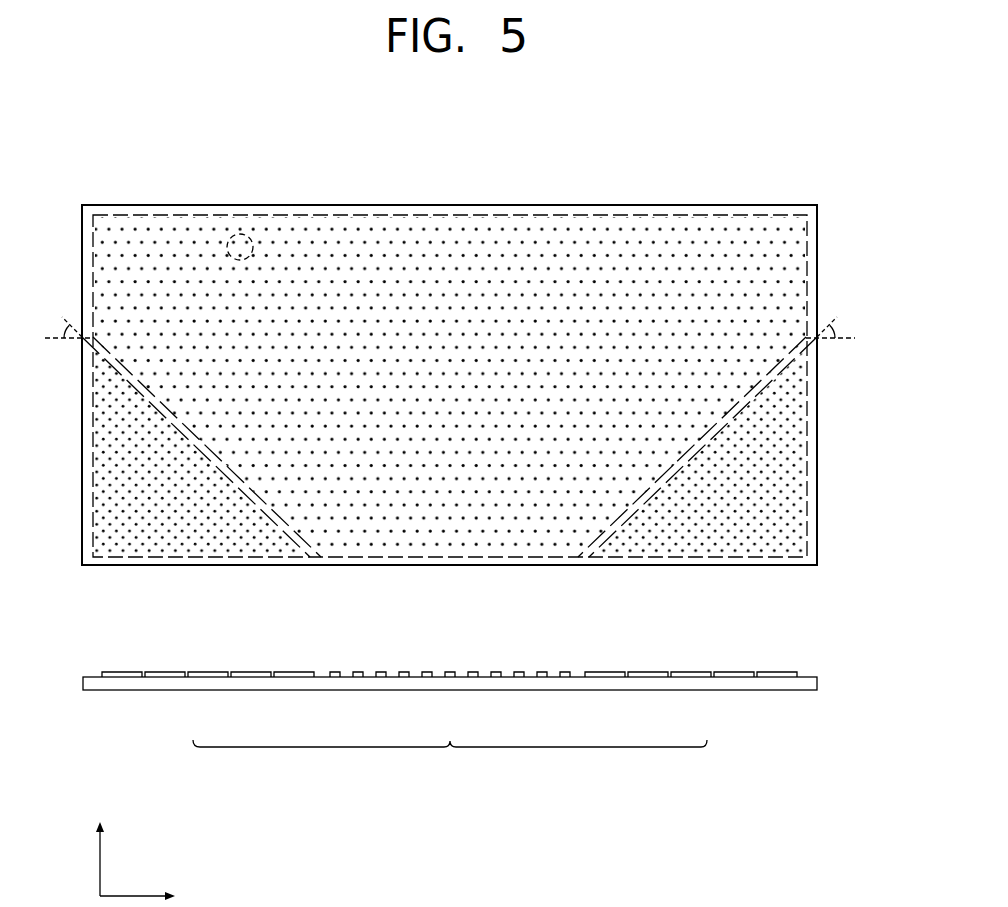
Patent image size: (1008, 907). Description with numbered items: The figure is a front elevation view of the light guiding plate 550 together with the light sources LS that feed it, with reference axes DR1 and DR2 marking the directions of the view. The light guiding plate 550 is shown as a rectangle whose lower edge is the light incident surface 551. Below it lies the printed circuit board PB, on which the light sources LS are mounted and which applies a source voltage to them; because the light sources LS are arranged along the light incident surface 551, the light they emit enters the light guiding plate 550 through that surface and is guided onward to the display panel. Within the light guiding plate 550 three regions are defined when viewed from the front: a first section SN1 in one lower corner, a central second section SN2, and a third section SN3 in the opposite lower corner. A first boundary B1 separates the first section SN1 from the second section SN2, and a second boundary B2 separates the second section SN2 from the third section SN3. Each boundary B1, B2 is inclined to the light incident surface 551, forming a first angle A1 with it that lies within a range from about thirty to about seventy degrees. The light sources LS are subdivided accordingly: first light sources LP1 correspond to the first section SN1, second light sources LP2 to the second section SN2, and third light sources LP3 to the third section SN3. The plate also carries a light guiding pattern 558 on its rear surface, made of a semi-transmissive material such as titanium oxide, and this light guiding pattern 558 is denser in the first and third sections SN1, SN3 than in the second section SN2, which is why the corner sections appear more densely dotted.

The light guiding plate 550 is at (777, 188).
The light incident surface 551 is at (767, 566).
The light guiding pattern 558 is at (239, 234).
The first section SN1 is at (216, 557).
The second section SN2 is at (450, 557).
The third section SN3 is at (722, 557).
The first boundary B1 is at (63, 313).
The second boundary B2 is at (836, 315).
The first angle A1 is at (449, 328).
The printed circuit board PB is at (807, 683).
The first light sources LP1 is at (209, 673).
The second light sources LP2 is at (470, 673).
The third light sources LP3 is at (690, 673).
The light sources LS is at (450, 760).
The first direction DR1 is at (156, 895).
The second direction DR2 is at (99, 845).